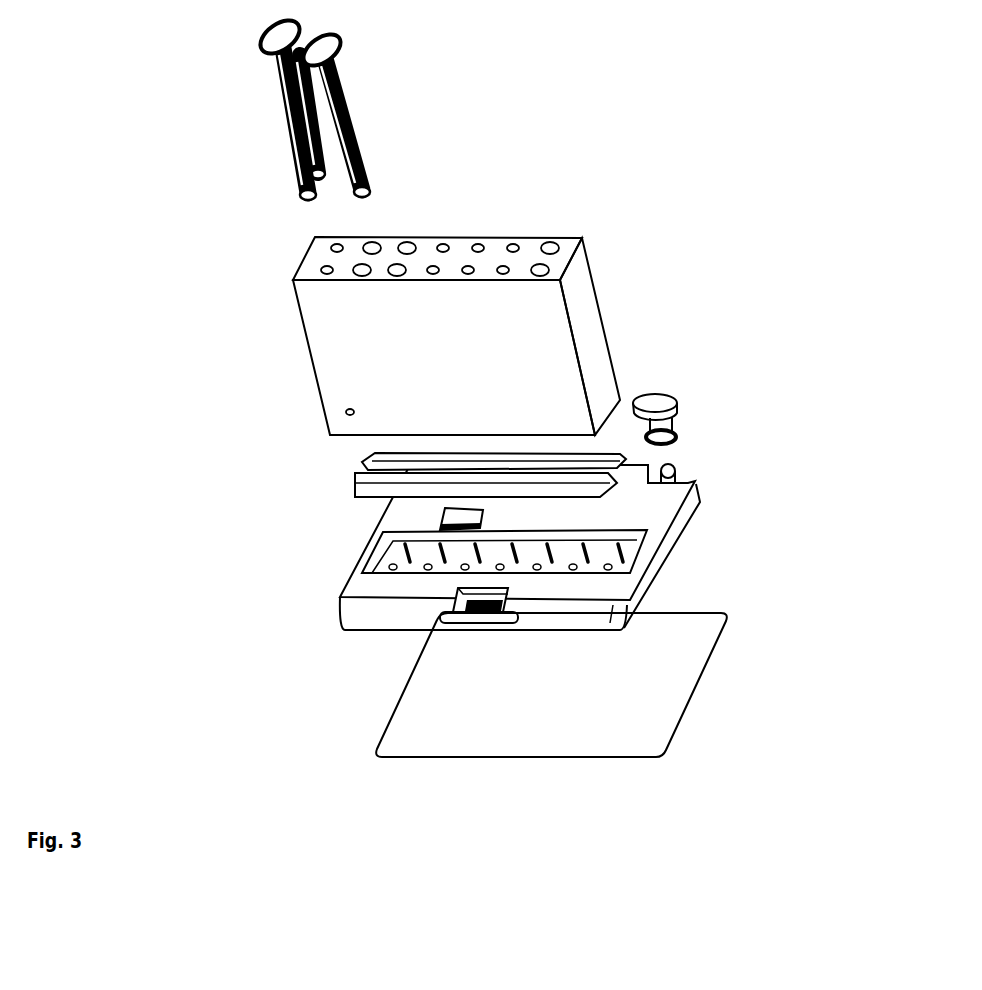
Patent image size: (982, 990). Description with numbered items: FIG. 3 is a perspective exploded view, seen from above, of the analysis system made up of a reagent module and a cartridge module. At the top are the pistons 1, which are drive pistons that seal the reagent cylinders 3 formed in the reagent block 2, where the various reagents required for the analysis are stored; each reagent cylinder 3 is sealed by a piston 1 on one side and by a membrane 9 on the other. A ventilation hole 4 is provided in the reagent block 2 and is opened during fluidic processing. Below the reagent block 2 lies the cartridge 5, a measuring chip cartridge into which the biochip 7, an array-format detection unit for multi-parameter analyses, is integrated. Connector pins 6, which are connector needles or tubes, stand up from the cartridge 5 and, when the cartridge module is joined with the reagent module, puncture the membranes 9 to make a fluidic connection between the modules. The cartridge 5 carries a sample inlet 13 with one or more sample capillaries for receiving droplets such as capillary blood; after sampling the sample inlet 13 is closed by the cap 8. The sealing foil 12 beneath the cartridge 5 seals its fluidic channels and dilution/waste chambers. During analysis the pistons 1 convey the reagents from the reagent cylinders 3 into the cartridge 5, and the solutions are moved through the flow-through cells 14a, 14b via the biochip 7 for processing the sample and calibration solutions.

The piston 1 is at (373, 162).
The reagent block 2 is at (387, 302).
The reagent cylinder 3 is at (553, 242).
The ventilation hole 4 is at (340, 407).
The cartridge 5 is at (547, 578).
The connector pin 6 is at (590, 545).
The biochip 7 is at (450, 515).
The cap 8 is at (687, 388).
The membrane 9 is at (350, 482).
The sealing foil 12 is at (693, 708).
The sample inlet 13 is at (683, 470).
The flow-through cell A 14a is at (470, 615).
The flow-through cell B 14b is at (493, 608).